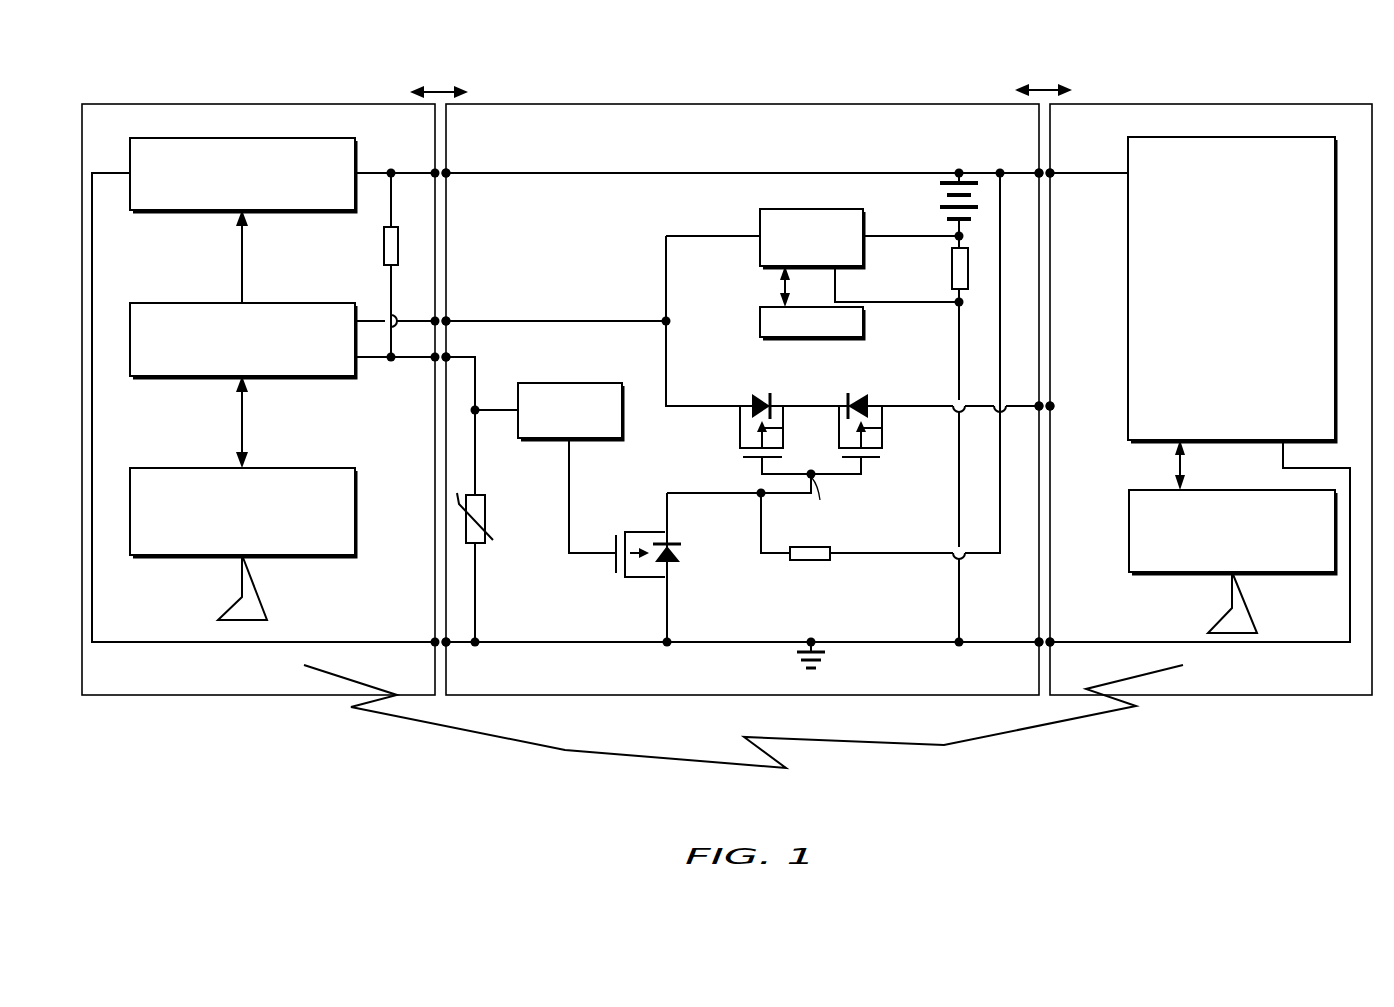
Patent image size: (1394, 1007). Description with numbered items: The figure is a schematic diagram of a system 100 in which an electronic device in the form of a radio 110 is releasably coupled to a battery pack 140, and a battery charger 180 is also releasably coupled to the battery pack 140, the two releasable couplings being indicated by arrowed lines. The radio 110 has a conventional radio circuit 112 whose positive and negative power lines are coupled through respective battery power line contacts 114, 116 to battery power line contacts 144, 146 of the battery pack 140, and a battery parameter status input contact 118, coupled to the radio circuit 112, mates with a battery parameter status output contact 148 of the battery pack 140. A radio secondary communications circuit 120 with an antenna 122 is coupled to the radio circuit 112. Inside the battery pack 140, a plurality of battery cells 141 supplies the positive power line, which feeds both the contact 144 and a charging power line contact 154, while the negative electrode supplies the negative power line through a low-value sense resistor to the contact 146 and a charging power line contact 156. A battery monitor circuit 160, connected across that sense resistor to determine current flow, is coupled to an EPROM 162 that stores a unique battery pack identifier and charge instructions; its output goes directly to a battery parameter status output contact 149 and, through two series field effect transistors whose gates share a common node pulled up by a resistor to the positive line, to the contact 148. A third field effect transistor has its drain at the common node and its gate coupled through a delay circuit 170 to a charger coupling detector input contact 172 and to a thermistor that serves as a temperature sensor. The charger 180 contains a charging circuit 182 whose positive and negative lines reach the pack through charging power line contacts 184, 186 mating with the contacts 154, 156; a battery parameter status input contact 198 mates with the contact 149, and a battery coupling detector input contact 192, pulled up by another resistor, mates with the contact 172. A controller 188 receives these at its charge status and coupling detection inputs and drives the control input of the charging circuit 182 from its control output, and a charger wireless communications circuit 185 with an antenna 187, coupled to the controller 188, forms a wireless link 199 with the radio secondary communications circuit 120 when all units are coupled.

The system 100 is at (1336, 52).
The radio 110 is at (1213, 103).
The radio circuit 112 is at (1146, 136).
The battery power line contact 114 is at (1053, 176).
The battery power line contact 116 is at (1053, 645).
The battery parameter status input contact 118 is at (1053, 409).
The radio secondary communications circuit 120 is at (1143, 489).
The antenna 122 is at (1245, 618).
The battery pack 140 is at (743, 103).
The battery cells 141 is at (934, 204).
The battery power line contact 144 is at (1036, 176).
The battery power line contact 146 is at (1036, 645).
The battery parameter status output contact 148 is at (1036, 409).
The battery parameter status output contact 149 is at (450, 320).
The charging power line contact 154 is at (449, 176).
The charging power line contact 156 is at (449, 646).
The battery monitor circuit 160 is at (768, 208).
The EPROM 162 is at (768, 305).
The delay circuit 170 is at (605, 384).
The charger coupling detector input contact 172 is at (450, 356).
The charger 180 is at (259, 103).
The charging circuit 182 is at (153, 136).
The charging power line contact 184 is at (433, 176).
The charger wireless communications circuit 185 is at (155, 467).
The charging power line contact 186 is at (433, 646).
The antenna 187 is at (232, 607).
The controller 188 is at (153, 302).
The battery coupling detector input contact 192 is at (432, 360).
The battery parameter status input contact 198 is at (432, 320).
The wireless link 199 is at (615, 752).